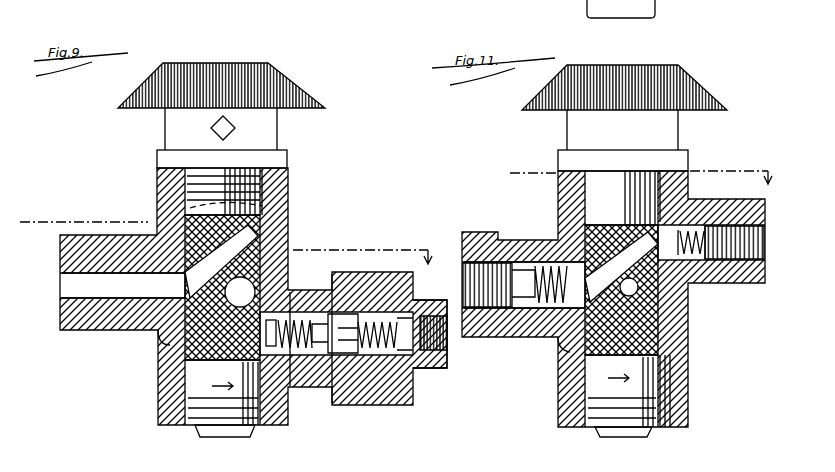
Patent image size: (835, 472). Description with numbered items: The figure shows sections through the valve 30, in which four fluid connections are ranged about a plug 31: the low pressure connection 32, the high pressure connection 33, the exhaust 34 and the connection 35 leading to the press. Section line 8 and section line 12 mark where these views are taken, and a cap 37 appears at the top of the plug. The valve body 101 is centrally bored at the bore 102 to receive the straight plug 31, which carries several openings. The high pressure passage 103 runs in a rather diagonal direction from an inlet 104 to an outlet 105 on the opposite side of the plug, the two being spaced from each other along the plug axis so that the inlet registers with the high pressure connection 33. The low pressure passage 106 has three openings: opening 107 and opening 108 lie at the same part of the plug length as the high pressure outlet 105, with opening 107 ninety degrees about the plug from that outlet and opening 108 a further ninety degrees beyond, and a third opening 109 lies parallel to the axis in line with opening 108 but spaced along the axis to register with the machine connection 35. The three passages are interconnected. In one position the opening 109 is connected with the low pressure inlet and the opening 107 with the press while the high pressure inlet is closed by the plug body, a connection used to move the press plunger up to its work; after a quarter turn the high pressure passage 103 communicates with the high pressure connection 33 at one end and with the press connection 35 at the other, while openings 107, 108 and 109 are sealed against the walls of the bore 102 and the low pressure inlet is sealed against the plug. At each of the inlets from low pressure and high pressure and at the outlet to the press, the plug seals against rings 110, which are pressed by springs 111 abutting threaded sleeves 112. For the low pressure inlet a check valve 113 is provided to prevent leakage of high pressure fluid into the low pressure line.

In FIG. 9, the section line 8- 8 is at (38, 226).
In FIG. 11, the section line 12- 12 is at (497, 200).
In FIG. 9, the valve 30 is at (278, 186).
In FIG. 11, the valve 30 is at (560, 188).
In FIG. 9, the plug 31 is at (200, 330).
In FIG. 11, the plug 31 is at (668, 190).
In FIG. 9, the low pressure connection 32 is at (318, 388).
In FIG. 9, the high pressure connection 33 is at (288, 214).
In FIG. 11, the high pressure connection 33 is at (712, 287).
In FIG. 9, the exhaust 34 is at (75, 244).
In FIG. 11, the connection to the press 35 is at (470, 250).
In FIG. 9, the cap 37 is at (268, 64).
In FIG. 11, the cap 37 is at (676, 66).
In FIG. 9, the valve body 101 is at (170, 185).
In FIG. 9, the central bore 102 is at (188, 207).
In FIG. 9, the high pressure passage 103 is at (165, 338).
In FIG. 11, the high pressure passage 103 is at (560, 340).
In FIG. 11, the high pressure passage inlet 104 is at (762, 232).
In FIG. 11, the high pressure passage outlet 105 is at (490, 318).
In FIG. 9, the low pressure passage 106 is at (235, 300).
In FIG. 11, the low pressure passage opening 107 is at (624, 297).
In FIG. 9, the low pressure passage opening 108 is at (272, 320).
In FIG. 11, the low pressure passage opening 108 is at (665, 292).
In FIG. 9, the low pressure passage opening 109 is at (198, 368).
In FIG. 11, the low pressure passage opening 109 is at (690, 342).
In FIG. 9, the rings 110 is at (305, 390).
In FIG. 9, the springs 111 is at (288, 318).
In FIG. 9, the threaded sleeves 112 is at (360, 370).
In FIG. 9, the check valve 113 is at (430, 368).